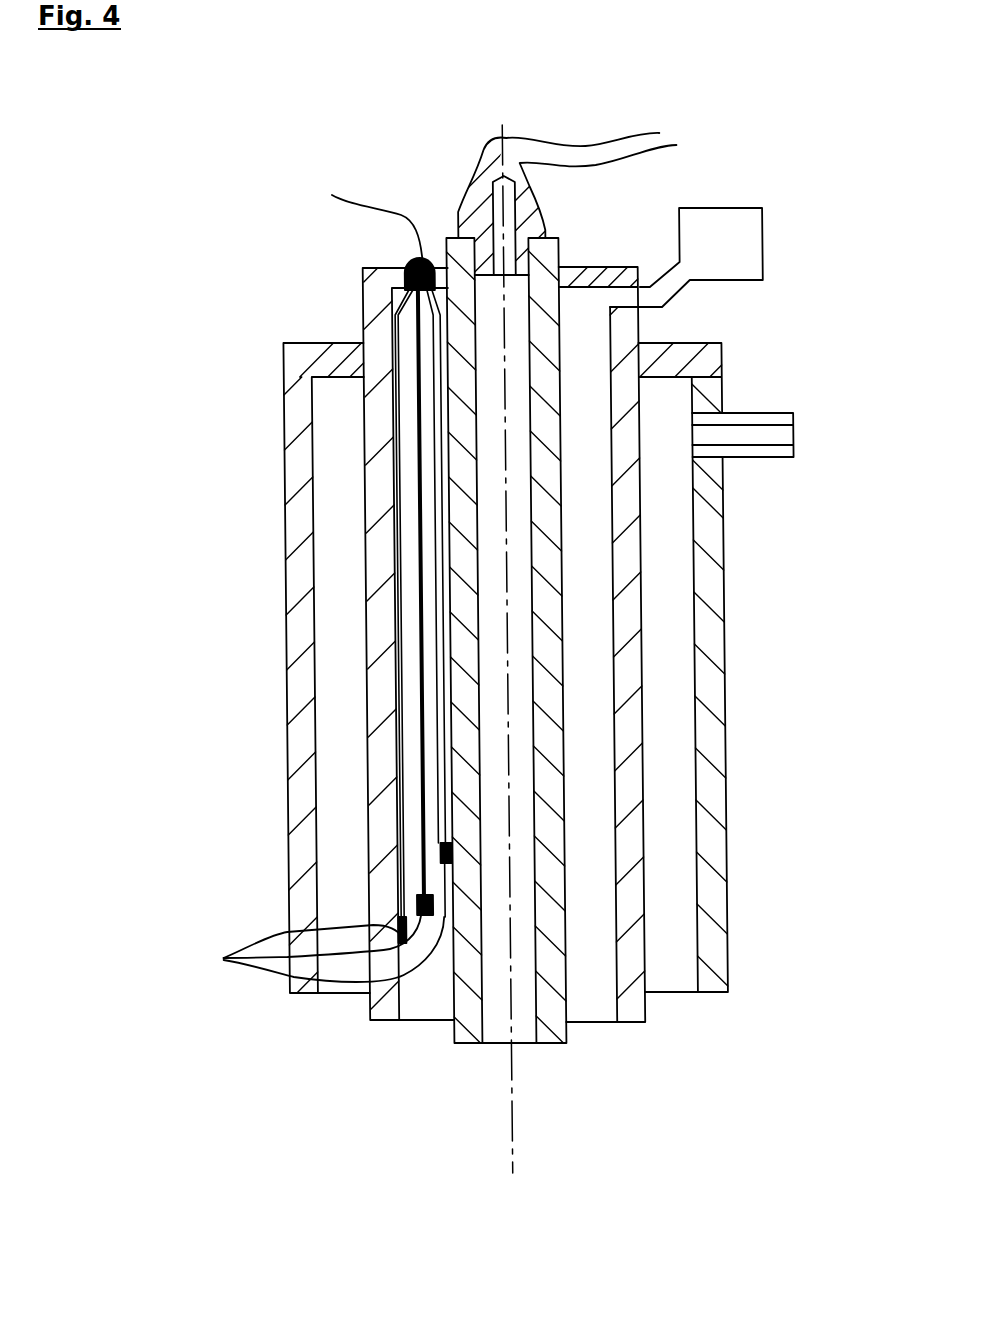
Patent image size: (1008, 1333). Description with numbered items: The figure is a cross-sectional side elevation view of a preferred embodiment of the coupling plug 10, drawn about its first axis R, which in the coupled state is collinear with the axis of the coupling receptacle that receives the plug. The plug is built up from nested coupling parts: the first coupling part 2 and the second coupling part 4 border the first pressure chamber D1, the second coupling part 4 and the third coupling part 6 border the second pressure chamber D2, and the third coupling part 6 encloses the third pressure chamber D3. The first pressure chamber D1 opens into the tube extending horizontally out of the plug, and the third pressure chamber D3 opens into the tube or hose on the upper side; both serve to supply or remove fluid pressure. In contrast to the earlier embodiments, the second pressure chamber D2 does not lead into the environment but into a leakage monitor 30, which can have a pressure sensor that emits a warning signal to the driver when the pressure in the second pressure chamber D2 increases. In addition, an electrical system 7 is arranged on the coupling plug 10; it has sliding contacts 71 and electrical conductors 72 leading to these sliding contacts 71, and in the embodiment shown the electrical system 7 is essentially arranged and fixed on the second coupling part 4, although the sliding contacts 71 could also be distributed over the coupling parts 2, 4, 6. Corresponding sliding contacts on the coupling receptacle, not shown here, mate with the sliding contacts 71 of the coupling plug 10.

The first coupling part 2 is at (298, 813).
The second coupling part 4 is at (626, 982).
The third coupling part 6 is at (560, 1042).
The electrical system 7 is at (398, 253).
The coupling plug 10 is at (258, 1089).
The leakage monitor 30 is at (741, 237).
The sliding contacts 71 is at (153, 938).
The electrical conductors 72 is at (440, 623).
The first pressure chamber D1 is at (667, 675).
The second pressure chamber D2 is at (580, 598).
The third pressure chamber D3 is at (515, 692).
The first axis R is at (504, 1142).